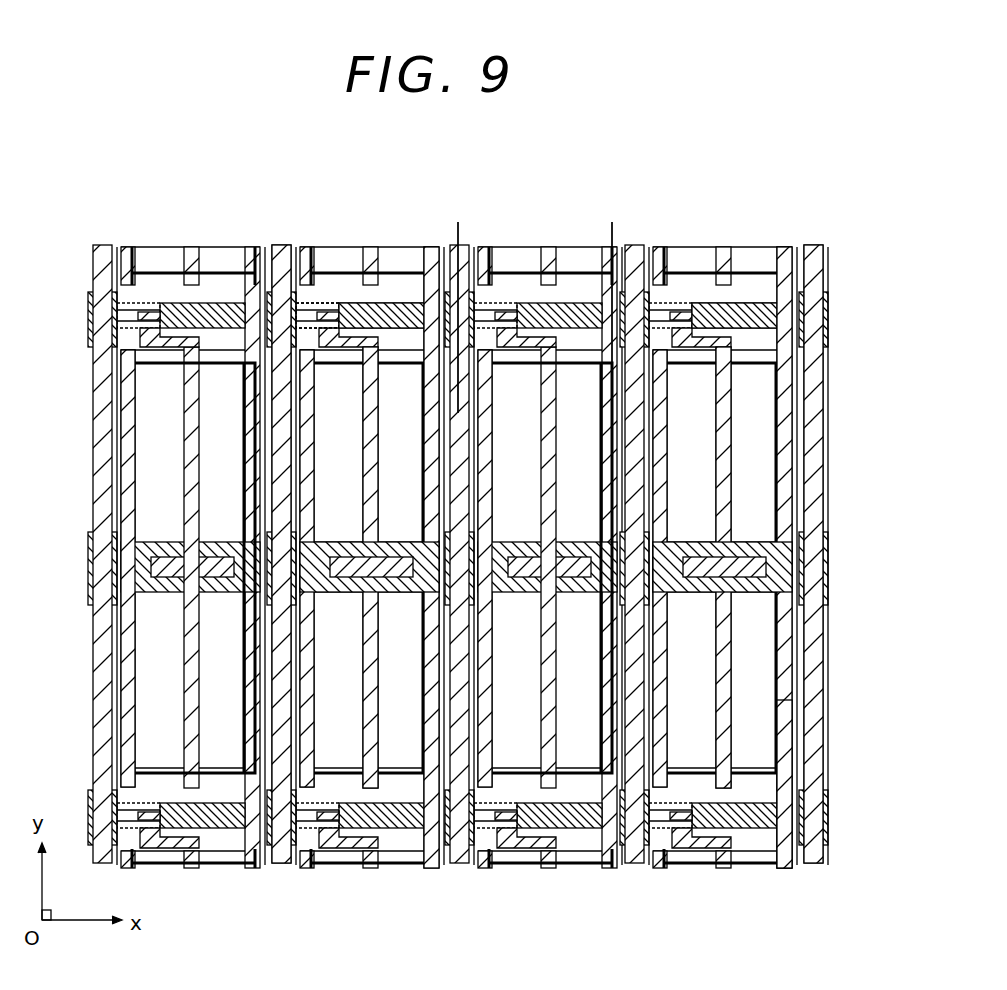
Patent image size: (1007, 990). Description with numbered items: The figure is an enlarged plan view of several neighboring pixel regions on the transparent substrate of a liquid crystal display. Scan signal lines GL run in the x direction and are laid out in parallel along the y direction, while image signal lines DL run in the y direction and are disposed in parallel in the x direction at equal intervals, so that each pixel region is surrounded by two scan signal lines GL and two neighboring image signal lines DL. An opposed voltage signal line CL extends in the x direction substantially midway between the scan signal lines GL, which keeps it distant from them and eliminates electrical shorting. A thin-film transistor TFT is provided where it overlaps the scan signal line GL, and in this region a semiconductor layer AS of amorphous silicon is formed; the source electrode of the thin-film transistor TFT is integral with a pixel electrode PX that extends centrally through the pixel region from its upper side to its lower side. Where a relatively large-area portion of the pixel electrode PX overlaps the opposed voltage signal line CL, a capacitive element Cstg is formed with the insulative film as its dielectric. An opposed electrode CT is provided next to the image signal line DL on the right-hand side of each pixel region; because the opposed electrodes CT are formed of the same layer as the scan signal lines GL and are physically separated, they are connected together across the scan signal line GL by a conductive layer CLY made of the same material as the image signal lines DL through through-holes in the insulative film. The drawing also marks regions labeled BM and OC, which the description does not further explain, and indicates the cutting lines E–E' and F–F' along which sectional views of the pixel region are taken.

The image signal line DL is at (281, 245).
The thin-film transistor TFT is at (314, 303).
The scan signal line GL is at (395, 303).
The section line E is at (459, 305).
The section line E' is at (470, 332).
The section line F is at (613, 297).
The section line F' is at (623, 321).
The conductive layer CLY is at (767, 303).
The opposed electrode CT is at (312, 445).
The pixel electrode PX is at (366, 522).
The opposed voltage signal line CL is at (343, 594).
The capacitive element Cstg is at (393, 580).
The black matrix BM is at (130, 705).
The overcoat film OC is at (780, 788).
The semiconductor layer AS is at (831, 548).